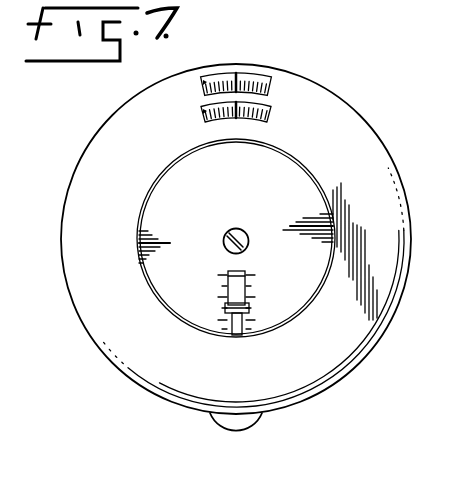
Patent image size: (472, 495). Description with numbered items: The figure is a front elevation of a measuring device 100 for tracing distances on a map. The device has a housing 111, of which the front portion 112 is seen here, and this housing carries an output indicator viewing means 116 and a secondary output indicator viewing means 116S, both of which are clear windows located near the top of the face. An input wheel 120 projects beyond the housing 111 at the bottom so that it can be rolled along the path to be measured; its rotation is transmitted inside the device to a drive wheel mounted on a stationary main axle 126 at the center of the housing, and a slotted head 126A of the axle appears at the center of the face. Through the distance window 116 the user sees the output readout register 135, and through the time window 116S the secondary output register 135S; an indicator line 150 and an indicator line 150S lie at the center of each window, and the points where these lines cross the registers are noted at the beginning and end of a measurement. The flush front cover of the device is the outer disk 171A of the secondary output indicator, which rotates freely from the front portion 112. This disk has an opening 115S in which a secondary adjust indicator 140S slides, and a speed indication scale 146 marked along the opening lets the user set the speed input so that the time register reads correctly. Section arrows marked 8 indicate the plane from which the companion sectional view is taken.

The measuring device 100 is at (389, 353).
The housing 111 is at (409, 304).
The front portion 112 is at (404, 229).
The opening 115S is at (246, 272).
The output indicator viewing means 116 is at (205, 78).
The secondary output indicator viewing means 116S is at (203, 109).
The input wheel 120 is at (262, 417).
The main axle 126 is at (248, 227).
The knob slot 126A is at (236, 228).
The output readout register 135 is at (272, 80).
The secondary output register 135S is at (272, 117).
The secondary adjust indicator 140S is at (238, 336).
The speed indication scale 146 is at (277, 321).
The indicator line 150 is at (239, 77).
The indicator line 150S is at (241, 122).
The outer disk 171A is at (158, 303).
The section line 8 is at (210, 30).